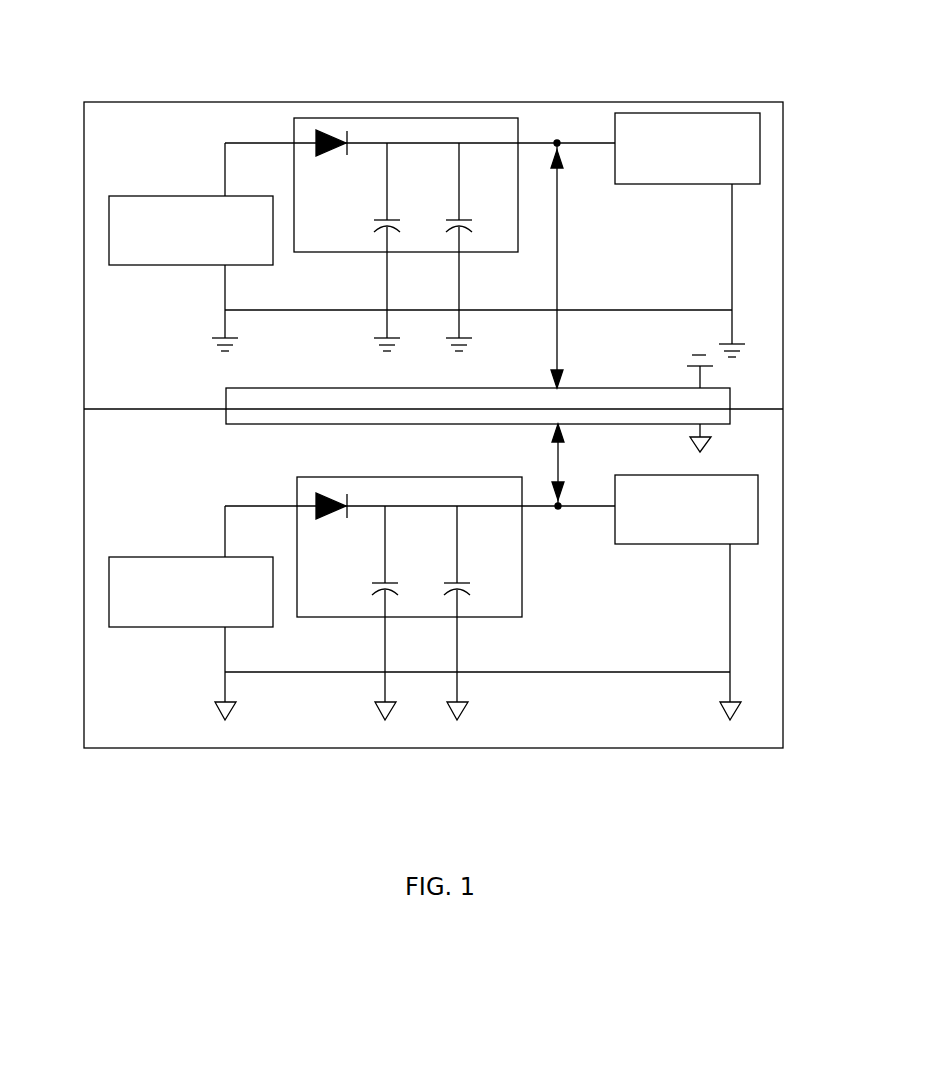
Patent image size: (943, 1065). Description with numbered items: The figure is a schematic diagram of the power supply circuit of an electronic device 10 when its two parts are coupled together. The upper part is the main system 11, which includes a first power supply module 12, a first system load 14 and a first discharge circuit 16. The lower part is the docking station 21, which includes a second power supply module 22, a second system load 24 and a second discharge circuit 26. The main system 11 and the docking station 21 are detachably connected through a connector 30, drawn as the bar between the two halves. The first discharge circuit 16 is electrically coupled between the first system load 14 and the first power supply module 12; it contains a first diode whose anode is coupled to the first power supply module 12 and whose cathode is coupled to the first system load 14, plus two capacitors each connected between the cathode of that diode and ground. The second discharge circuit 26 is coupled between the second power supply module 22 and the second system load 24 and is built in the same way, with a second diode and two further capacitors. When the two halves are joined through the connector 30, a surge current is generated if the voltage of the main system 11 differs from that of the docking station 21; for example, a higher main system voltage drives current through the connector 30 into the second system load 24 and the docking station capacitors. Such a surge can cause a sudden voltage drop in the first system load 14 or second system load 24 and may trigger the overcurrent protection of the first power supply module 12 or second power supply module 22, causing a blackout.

The electronic device 10 is at (215, 41).
The main system 11 is at (630, 102).
The first power supply module 12 is at (108, 233).
The first system load 14 is at (760, 143).
The first discharge circuit 16 is at (418, 118).
The docking station 21 is at (653, 748).
The second power supply module 22 is at (108, 592).
The second system load 24 is at (758, 505).
The second discharge circuit 26 is at (522, 565).
The connector 30 is at (730, 424).